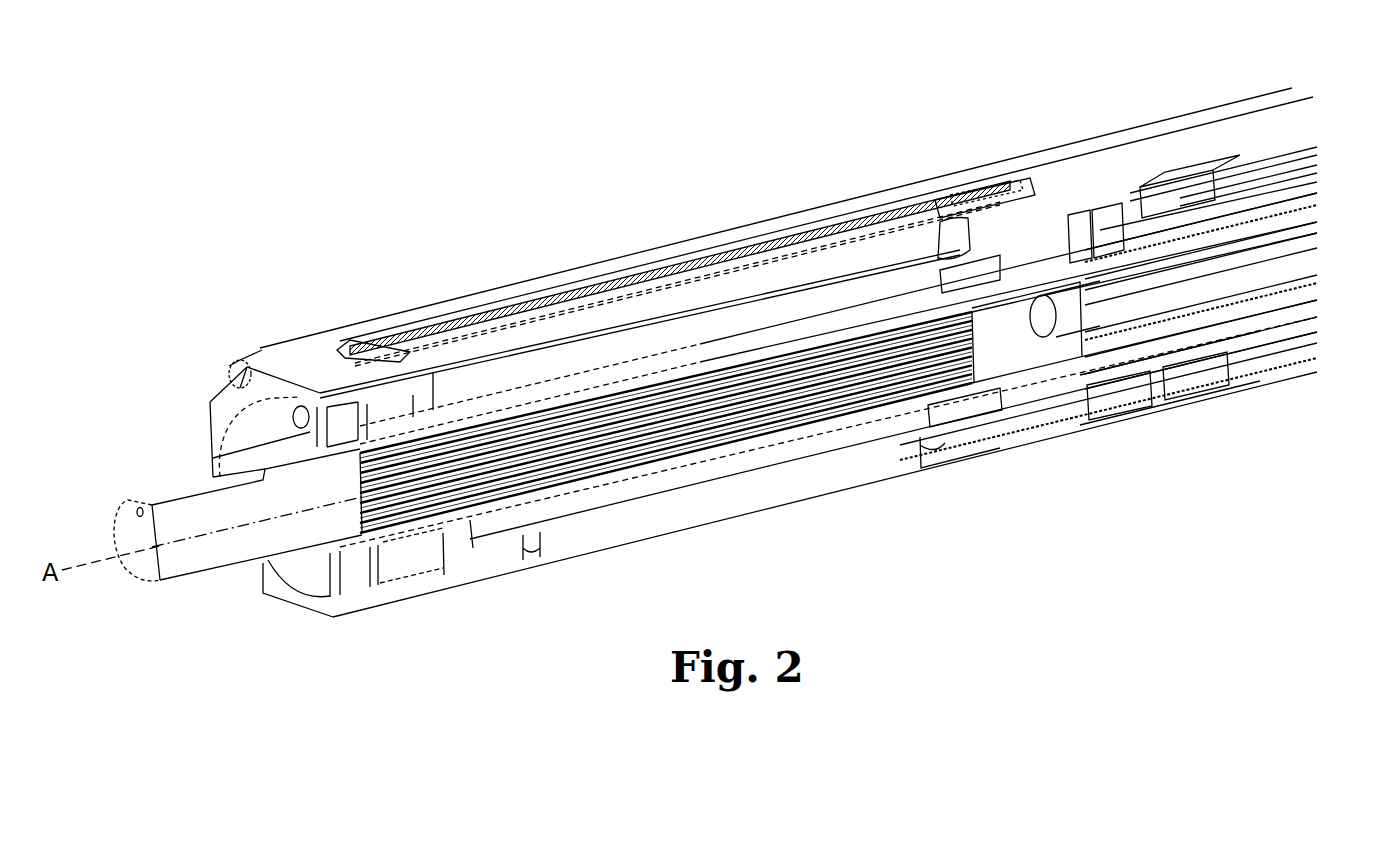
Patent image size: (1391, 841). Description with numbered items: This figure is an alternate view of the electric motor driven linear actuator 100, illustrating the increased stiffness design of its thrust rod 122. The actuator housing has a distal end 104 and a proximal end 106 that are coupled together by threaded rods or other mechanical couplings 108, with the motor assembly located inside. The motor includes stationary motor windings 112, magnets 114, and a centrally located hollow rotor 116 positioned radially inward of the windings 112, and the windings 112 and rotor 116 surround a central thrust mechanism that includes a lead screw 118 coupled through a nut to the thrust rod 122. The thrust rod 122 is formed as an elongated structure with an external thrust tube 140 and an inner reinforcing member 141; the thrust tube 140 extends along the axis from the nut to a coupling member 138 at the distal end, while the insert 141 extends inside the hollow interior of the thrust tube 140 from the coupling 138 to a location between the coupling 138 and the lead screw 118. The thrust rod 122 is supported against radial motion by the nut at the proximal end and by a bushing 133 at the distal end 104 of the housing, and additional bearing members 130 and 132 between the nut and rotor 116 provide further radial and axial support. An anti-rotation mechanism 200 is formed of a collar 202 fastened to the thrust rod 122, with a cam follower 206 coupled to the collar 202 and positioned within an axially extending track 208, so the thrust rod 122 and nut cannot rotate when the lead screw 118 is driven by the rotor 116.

The linear actuator 100 is at (556, 173).
The distal end 104 is at (374, 318).
The proximal end 106 is at (1140, 123).
The mechanical couplings 108 is at (232, 380).
The motor windings 112 is at (1253, 177).
The magnets 114 is at (1312, 330).
The rotor 116 is at (1260, 347).
The lead screw 118 is at (1043, 348).
The thrust rod 122 is at (595, 500).
The bearing member 130 is at (1107, 247).
The bearing member 132 is at (1087, 217).
The bushing 133 is at (400, 568).
The coupling member 138 is at (190, 573).
The external thrust tube 140 is at (470, 523).
The inner reinforcing member 141 is at (742, 422).
The anti-rotation mechanism 200 is at (943, 217).
The collar 202 is at (933, 410).
The cam follower 206 is at (933, 237).
The axially extending track 208 is at (755, 262).